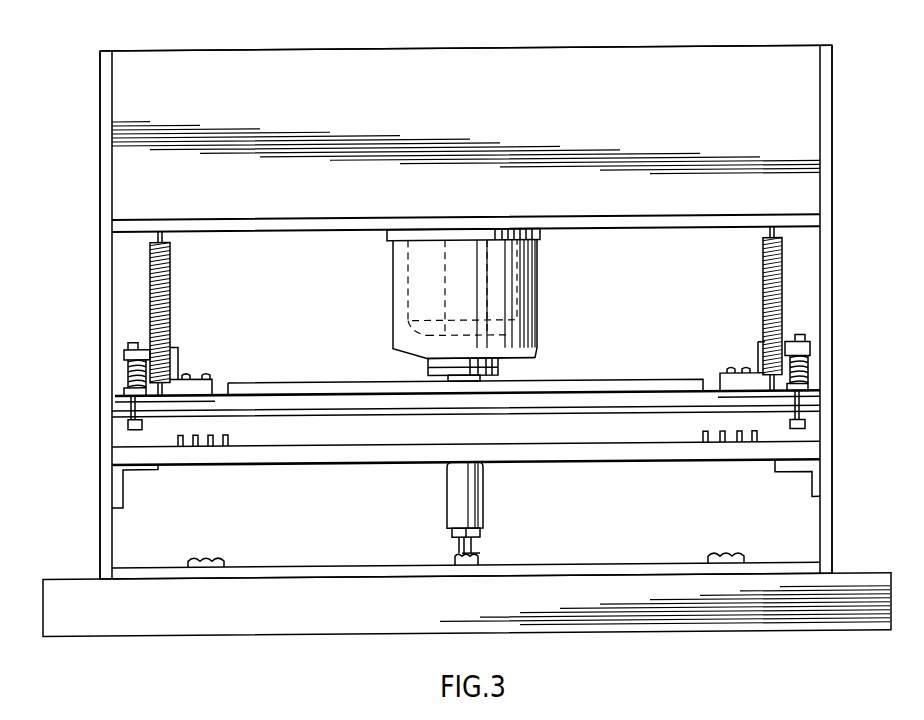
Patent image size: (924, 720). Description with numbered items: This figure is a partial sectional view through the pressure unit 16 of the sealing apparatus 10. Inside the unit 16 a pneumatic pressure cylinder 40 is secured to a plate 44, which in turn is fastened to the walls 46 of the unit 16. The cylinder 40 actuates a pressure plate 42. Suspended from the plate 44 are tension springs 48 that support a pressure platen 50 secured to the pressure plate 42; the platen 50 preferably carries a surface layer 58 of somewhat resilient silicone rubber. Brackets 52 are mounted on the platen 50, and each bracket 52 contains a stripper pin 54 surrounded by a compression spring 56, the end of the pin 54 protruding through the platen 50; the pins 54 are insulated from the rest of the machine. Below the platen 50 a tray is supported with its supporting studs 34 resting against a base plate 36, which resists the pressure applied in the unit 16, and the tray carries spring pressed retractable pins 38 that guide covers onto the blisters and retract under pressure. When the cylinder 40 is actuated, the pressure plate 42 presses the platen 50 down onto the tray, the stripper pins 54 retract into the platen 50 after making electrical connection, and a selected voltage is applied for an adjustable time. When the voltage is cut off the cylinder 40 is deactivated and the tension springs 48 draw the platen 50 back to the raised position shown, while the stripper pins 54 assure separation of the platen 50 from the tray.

The apparatus 10 is at (92, 90).
The pressure unit 16 is at (386, 52).
The walls 46 is at (115, 197).
The plate 44 is at (297, 220).
The pneumatic pressure cylinder 40 is at (393, 276).
The tension springs 48 is at (172, 285).
The brackets 52 is at (180, 365).
The stripper pin 54 is at (128, 367).
The compression spring 56 is at (130, 380).
The pressure platen 50 is at (305, 396).
The pressure plate 42 is at (616, 388).
The surface layer 58 is at (340, 408).
The retractable pins 38 is at (215, 435).
The supporting studs 34 is at (447, 506).
The base plate 36 is at (352, 568).